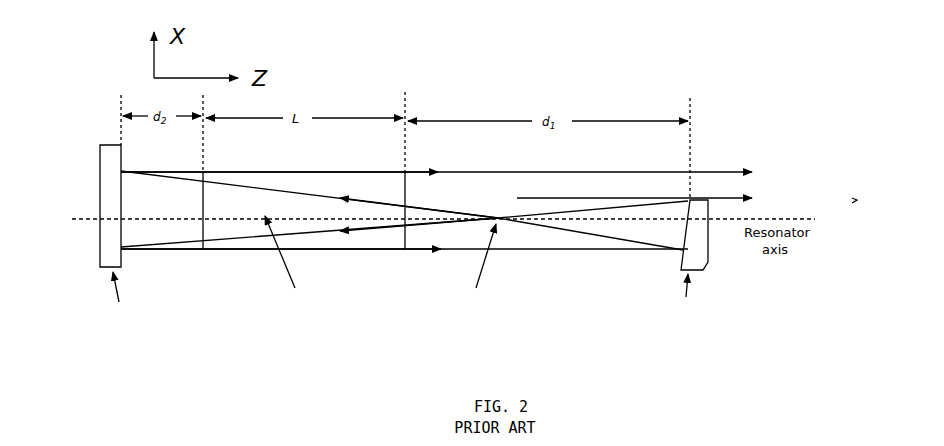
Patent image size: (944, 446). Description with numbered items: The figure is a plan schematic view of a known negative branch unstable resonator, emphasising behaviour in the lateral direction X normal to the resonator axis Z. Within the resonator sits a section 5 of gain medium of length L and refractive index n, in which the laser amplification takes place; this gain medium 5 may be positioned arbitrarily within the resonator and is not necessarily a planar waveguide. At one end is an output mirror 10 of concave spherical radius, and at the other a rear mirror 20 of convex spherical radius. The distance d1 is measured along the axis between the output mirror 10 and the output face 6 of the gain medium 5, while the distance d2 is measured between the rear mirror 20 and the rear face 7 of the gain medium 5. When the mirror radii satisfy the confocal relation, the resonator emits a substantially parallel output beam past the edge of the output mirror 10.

The rear mirror 20 is at (100, 162).
The output mirror 10 is at (708, 262).
The section of gain medium 5 is at (372, 249).
The rear face of the gain medium 7 is at (200, 192).
The output face of the gain medium 6 is at (404, 190).